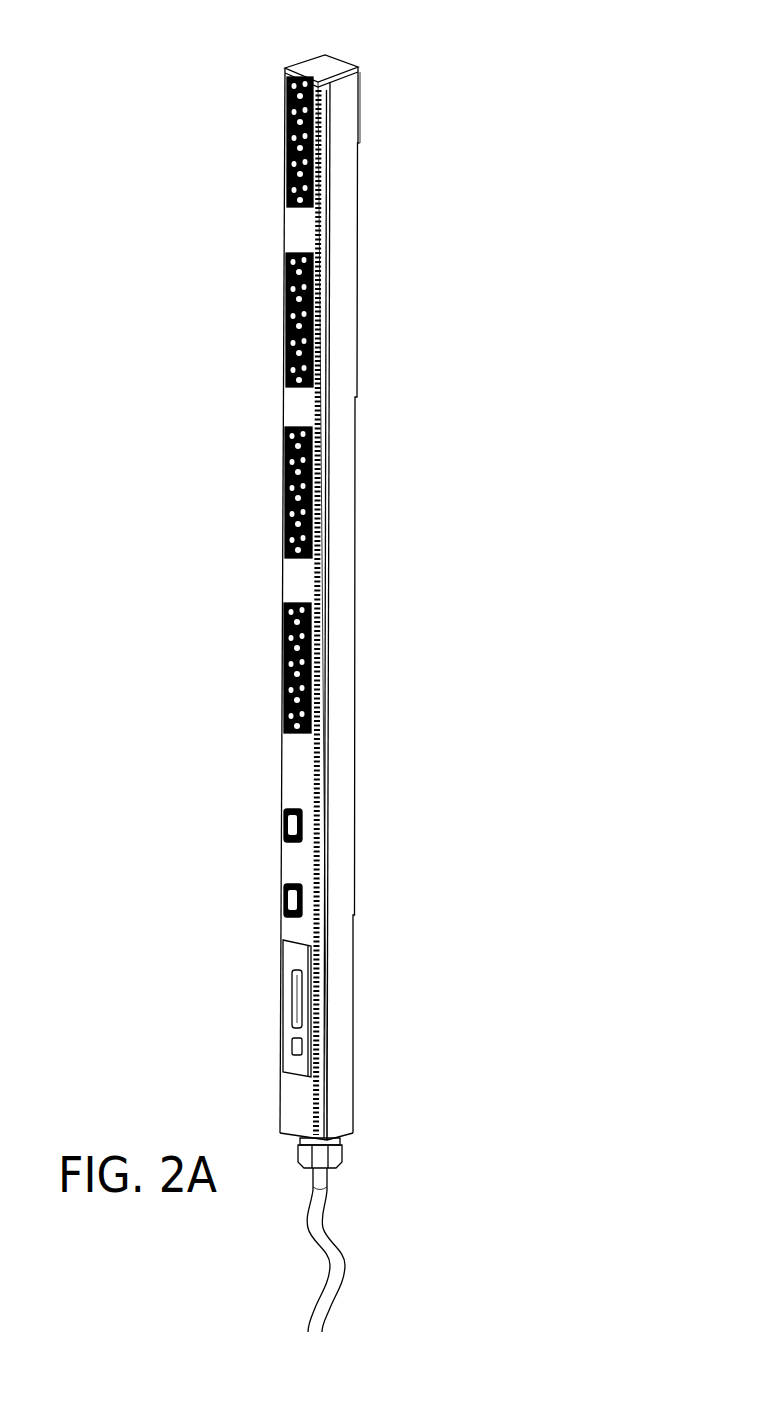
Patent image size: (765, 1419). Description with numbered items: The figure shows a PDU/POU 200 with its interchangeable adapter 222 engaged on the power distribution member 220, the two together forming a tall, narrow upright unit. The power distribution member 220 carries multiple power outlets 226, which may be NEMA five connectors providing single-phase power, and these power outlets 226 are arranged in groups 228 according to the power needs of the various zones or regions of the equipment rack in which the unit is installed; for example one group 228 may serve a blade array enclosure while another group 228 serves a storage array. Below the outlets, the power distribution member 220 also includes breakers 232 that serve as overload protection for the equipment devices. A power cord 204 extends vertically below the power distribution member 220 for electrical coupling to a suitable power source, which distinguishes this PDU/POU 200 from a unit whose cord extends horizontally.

The PDU/POU 200 is at (345, 33).
The power distribution member 220 is at (355, 498).
The interchangeable adapter 222 is at (353, 977).
The power outlet 226 is at (285, 275).
The group of power outlets 228 is at (268, 75).
The breaker 232 is at (283, 823).
The power cord 204 is at (347, 1263).